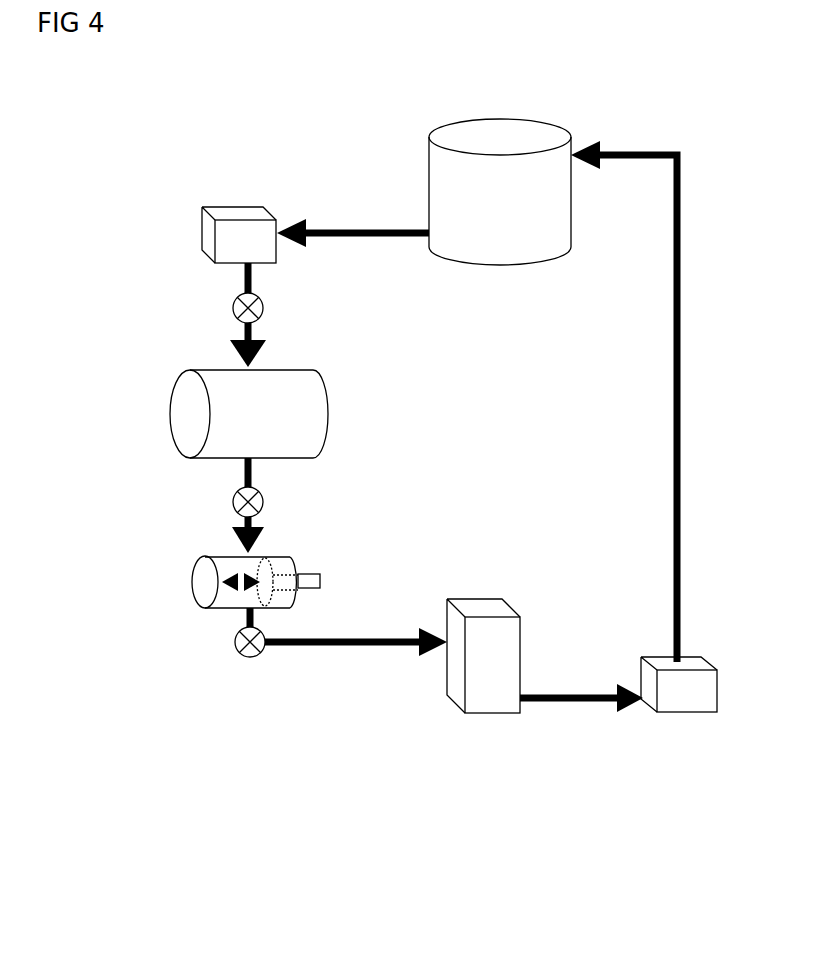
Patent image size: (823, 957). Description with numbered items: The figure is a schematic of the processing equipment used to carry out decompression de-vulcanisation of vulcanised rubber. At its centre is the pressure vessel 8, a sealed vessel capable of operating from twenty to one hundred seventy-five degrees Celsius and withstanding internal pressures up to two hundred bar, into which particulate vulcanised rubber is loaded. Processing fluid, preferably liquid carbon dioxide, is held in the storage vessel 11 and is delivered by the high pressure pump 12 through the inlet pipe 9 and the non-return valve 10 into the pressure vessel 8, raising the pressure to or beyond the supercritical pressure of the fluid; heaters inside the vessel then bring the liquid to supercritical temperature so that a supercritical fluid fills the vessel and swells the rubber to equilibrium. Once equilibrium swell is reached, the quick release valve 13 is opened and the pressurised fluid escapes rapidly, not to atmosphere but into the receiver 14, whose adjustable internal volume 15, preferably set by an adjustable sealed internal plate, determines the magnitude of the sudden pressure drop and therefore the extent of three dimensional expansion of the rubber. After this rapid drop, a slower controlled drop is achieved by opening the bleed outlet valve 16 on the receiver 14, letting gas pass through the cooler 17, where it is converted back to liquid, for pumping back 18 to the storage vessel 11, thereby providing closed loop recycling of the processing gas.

The pressure vessel 8 is at (150, 405).
The inlet pipe 9 is at (225, 345).
The non-return valve 10 is at (215, 309).
The storage vessel 11 is at (187, 228).
The high pressure pump 12 is at (408, 152).
The quick release valve 13 is at (219, 502).
The receiver 14 is at (175, 582).
The adjustable internal volume 15 is at (226, 596).
The bleed outlet valve 16 is at (250, 670).
The cooler 17 is at (490, 726).
The pumping back 18 is at (686, 725).